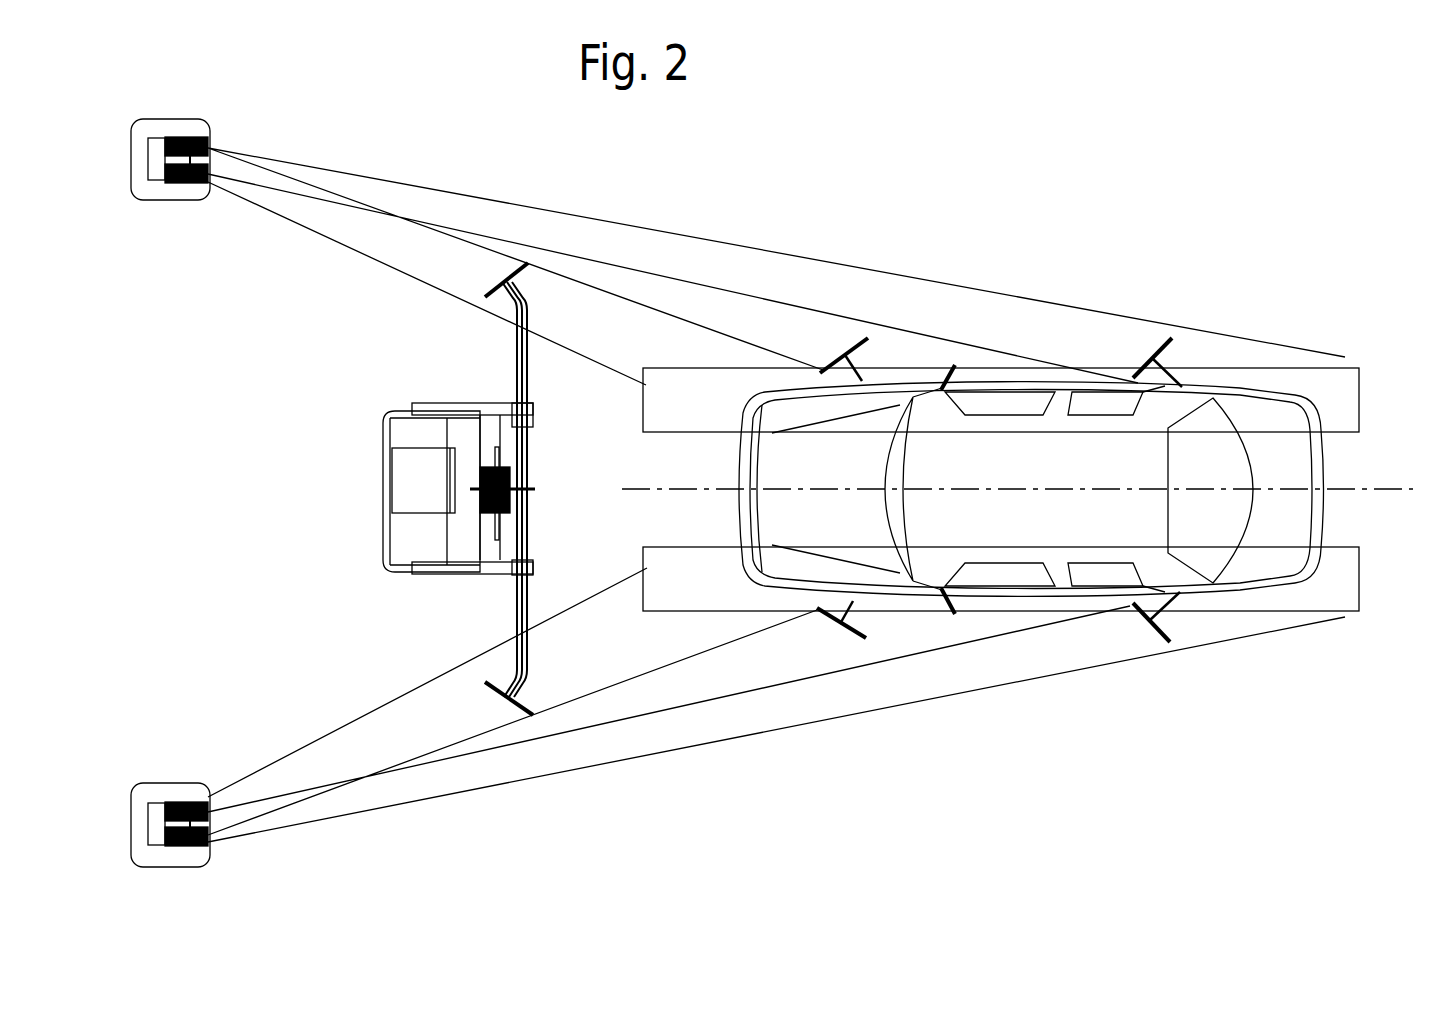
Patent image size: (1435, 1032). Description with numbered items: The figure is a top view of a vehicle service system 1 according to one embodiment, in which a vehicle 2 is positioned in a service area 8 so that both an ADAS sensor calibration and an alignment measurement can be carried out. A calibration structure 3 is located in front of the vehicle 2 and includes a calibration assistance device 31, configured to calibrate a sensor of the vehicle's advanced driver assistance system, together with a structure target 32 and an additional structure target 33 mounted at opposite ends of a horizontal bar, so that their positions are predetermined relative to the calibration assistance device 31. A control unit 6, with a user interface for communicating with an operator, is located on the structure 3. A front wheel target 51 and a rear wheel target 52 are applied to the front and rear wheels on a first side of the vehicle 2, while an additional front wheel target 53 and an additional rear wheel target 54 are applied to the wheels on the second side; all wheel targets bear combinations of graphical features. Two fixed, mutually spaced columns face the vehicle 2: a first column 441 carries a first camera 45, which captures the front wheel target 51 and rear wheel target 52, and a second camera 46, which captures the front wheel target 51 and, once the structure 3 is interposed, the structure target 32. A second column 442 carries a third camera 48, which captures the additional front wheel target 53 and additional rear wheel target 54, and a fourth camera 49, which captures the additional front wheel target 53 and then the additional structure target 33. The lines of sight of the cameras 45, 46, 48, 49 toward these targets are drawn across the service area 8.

The vehicle service system 1 is at (824, 206).
The vehicle 2 is at (1069, 469).
The calibration structure 3 is at (488, 394).
The control unit 6 is at (428, 495).
The service area 8 is at (1046, 358).
The calibration assistance device 31 is at (531, 527).
The structure target 32 is at (486, 694).
The additional structure target 33 is at (487, 284).
The first camera 45 is at (196, 850).
The second camera 46 is at (180, 803).
The third camera 48 is at (197, 137).
The fourth camera 49 is at (182, 184).
The front wheel target 51 is at (830, 616).
The rear wheel target 52 is at (1133, 615).
The additional front wheel target 53 is at (843, 347).
The additional rear wheel target 54 is at (1150, 350).
The first column 441 is at (160, 803).
The second column 442 is at (152, 137).